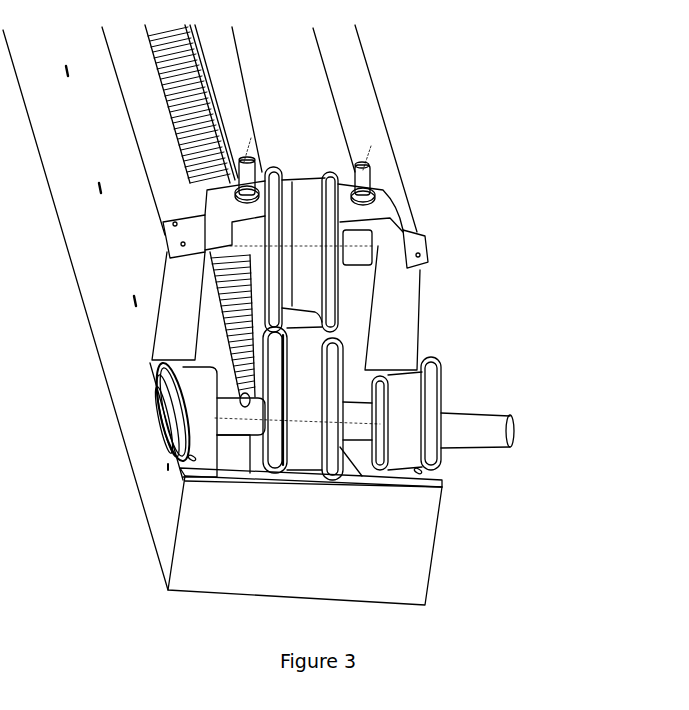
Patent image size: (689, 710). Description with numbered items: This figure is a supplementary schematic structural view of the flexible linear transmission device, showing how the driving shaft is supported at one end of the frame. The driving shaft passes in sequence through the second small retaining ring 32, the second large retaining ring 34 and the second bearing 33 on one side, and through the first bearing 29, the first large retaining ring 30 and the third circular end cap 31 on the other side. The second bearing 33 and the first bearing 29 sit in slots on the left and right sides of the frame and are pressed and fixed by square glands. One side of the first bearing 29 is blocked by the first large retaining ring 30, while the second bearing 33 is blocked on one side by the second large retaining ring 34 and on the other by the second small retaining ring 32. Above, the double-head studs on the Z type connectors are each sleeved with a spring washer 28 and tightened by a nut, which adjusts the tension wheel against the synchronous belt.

The spring washer 28 is at (375, 198).
The first bearing 29 is at (440, 362).
The first large retaining ring 30 is at (448, 390).
The third circular end cap 31 is at (503, 420).
The second small retaining ring 32 is at (162, 392).
The second bearing 33 is at (158, 405).
The second large retaining ring 34 is at (160, 435).